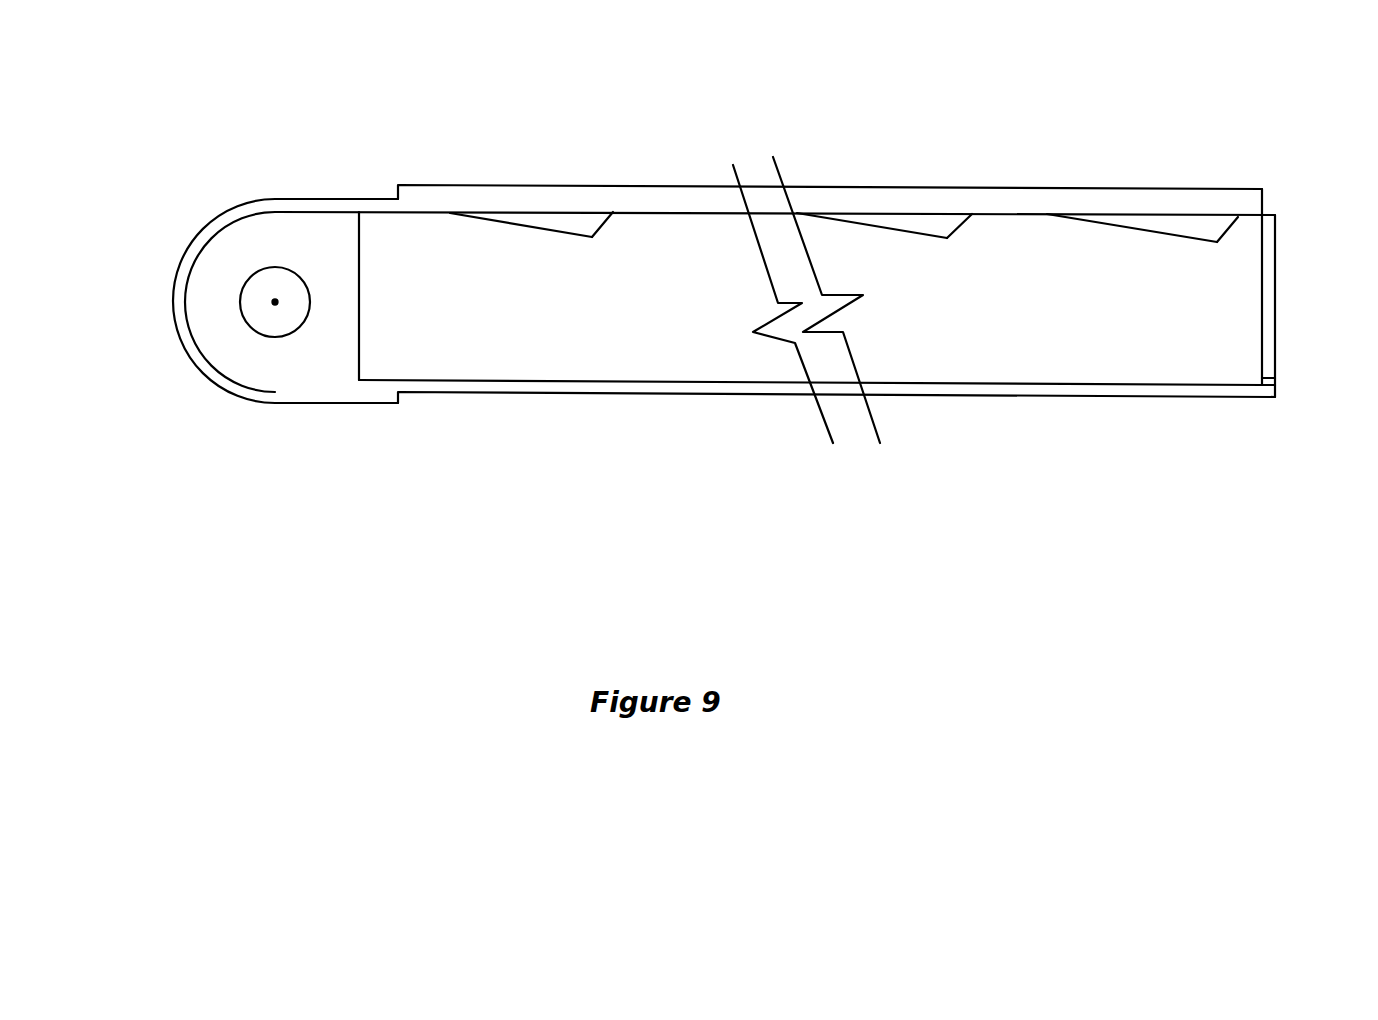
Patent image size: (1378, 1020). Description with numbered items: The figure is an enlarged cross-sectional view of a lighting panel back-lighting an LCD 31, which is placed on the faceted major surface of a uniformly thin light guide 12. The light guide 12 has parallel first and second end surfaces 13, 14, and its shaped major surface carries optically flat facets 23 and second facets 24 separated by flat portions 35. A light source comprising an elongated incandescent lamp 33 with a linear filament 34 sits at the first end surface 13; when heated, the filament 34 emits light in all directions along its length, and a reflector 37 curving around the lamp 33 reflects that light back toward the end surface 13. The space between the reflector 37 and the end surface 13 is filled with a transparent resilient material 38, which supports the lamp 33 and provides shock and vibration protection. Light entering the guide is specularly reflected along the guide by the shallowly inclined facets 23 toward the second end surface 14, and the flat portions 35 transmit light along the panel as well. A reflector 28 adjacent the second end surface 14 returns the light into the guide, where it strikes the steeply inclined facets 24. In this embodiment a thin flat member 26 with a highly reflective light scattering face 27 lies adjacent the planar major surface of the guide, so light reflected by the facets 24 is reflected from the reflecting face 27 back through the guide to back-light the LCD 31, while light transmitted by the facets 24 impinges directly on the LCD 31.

The light guide 12 is at (567, 338).
The first end surface 13 is at (360, 354).
The second end surface 14 is at (1260, 302).
The optically flat facets 23 is at (517, 223).
The second facets 24 is at (605, 220).
The thin flat member 26 is at (634, 383).
The reflective light scattering face 27 is at (912, 382).
The reflector 28 is at (1268, 330).
The LCD 31 is at (881, 190).
The incandescent lamp 33 is at (273, 264).
The filament 34 is at (270, 300).
The flat portions 35 is at (1023, 215).
The reflector 37 is at (188, 362).
The transparent resilient material 38 is at (273, 360).